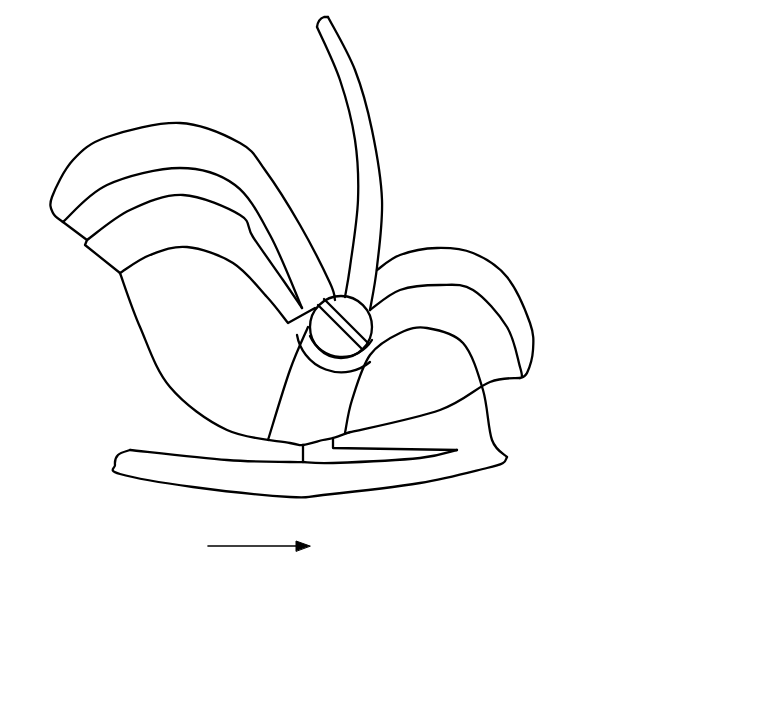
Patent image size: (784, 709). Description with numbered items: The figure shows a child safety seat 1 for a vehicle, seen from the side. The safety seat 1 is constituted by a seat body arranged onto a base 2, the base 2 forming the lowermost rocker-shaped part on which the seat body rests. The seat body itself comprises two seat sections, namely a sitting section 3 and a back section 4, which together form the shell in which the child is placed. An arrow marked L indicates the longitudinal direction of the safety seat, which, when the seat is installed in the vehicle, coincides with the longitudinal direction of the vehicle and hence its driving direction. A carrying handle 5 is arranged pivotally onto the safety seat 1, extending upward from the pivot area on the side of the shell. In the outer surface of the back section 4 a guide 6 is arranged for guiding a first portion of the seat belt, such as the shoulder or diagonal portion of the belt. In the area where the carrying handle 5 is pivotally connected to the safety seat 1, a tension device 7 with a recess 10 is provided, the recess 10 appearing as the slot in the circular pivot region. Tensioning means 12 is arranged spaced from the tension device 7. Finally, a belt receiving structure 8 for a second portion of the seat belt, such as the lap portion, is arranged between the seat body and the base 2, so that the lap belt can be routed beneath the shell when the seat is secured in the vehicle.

The safety seat 1 is at (568, 125).
The base 2 is at (447, 468).
The sitting section 3 is at (457, 377).
The back section 4 is at (167, 317).
The carrying handle 5 is at (357, 103).
The guide 6 is at (137, 185).
The tension device 7 is at (367, 327).
The belt receiving structure 8 is at (317, 453).
The recess 10 is at (340, 297).
The tensioning means 12 is at (320, 360).